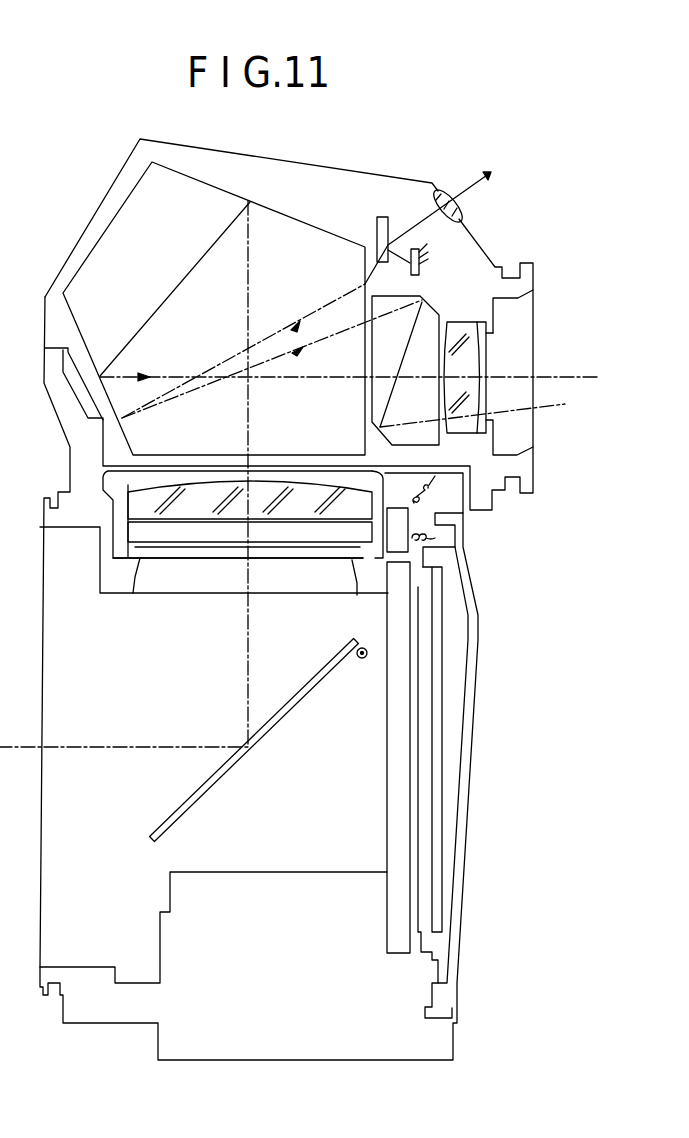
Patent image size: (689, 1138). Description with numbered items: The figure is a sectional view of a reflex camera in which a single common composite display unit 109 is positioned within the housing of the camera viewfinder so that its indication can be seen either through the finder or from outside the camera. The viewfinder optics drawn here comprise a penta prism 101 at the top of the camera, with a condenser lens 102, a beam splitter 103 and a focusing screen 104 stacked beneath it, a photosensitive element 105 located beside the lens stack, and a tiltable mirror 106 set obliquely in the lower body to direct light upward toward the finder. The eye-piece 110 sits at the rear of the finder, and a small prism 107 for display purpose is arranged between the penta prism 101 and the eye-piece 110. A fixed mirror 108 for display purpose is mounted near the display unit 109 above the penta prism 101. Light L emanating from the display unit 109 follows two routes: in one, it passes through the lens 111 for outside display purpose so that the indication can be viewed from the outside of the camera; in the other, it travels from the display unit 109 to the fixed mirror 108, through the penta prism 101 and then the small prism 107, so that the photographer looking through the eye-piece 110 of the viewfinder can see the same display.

The penta prism 101 is at (108, 246).
The condenser lens 102 is at (150, 495).
The beam splitter 103 is at (148, 530).
The focusing screen 104 is at (150, 553).
The photosensitive element 105 is at (402, 530).
The tiltable mirror 106 is at (268, 730).
The small prism 107 is at (428, 323).
The fixed mirror 108 is at (420, 258).
The display unit 109 is at (386, 220).
The eye-piece 110 is at (462, 355).
The lens 111 is at (462, 208).
The light beam L is at (284, 332).